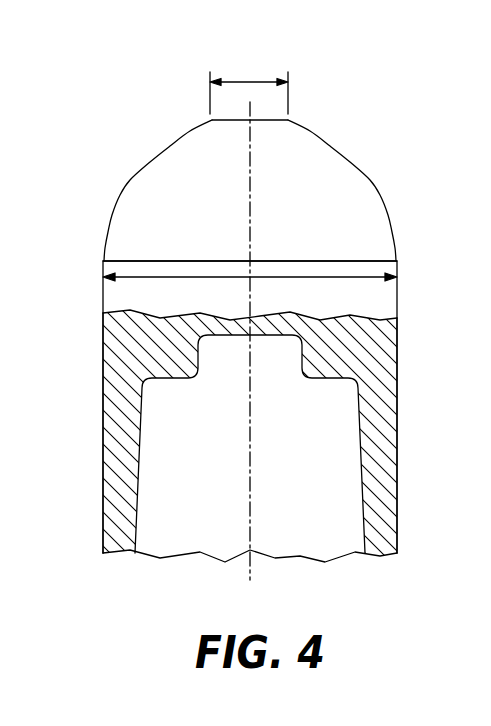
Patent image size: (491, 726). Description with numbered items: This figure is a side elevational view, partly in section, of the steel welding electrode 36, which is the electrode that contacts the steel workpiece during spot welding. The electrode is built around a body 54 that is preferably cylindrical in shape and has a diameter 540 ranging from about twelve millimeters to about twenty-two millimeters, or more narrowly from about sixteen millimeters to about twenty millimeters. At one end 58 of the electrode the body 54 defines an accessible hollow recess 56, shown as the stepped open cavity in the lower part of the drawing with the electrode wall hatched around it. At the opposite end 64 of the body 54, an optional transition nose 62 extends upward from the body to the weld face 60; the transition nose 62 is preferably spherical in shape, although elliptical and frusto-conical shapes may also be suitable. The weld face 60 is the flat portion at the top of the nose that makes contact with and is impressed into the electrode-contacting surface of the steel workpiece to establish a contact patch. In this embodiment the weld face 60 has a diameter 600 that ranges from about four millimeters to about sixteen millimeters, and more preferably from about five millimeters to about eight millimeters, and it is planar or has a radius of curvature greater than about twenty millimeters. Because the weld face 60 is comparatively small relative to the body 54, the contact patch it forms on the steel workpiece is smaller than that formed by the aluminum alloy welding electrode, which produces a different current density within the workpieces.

The steel welding electrode 36 is at (401, 246).
The body 54 is at (121, 298).
The accessible hollow recess 56 is at (363, 522).
The one end 58 is at (100, 559).
The weld face 60 is at (268, 120).
The transition nose 62 is at (125, 183).
The opposite end 64 is at (99, 254).
The diameter 540 is at (350, 279).
The diameter 600 is at (248, 80).